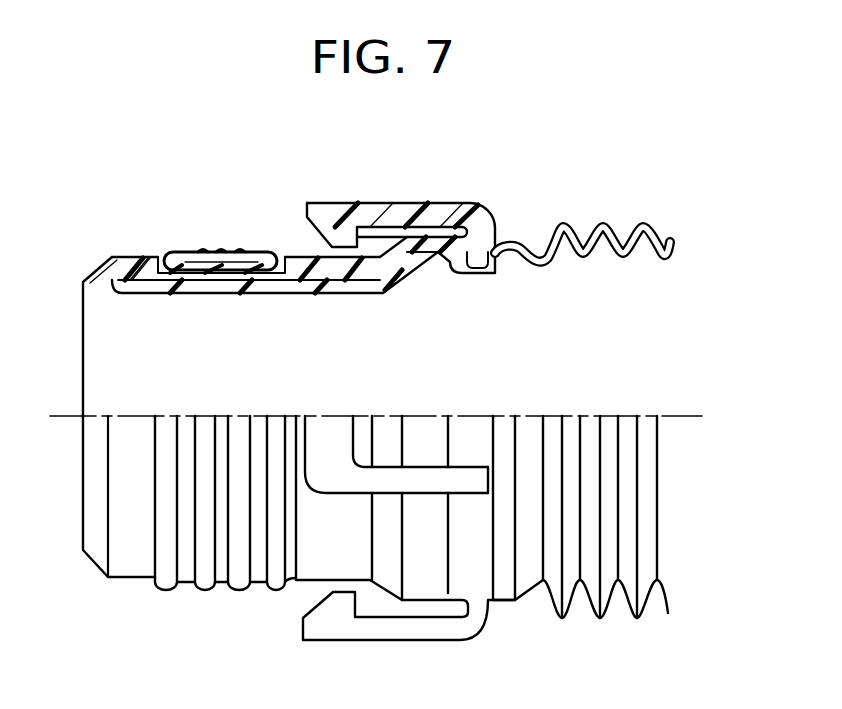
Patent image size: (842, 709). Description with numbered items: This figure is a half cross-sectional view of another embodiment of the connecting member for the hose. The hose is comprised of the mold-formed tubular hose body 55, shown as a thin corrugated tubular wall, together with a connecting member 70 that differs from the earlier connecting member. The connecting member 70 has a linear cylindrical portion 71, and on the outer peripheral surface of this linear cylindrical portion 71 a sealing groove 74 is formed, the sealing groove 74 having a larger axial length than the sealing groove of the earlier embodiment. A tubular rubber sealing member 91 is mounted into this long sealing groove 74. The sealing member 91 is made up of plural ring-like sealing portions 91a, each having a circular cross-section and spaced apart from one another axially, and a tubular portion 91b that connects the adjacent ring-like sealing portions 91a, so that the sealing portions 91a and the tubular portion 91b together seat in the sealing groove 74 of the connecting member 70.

The hose body 55 is at (523, 233).
The connecting member 70 is at (403, 188).
The linear cylindrical portion 71 is at (340, 270).
The sealing groove 74 is at (270, 273).
The tubular rubber sealing member 91 is at (201, 203).
The ring-like sealing portions 91a is at (203, 252).
The tubular portion 91b is at (226, 212).